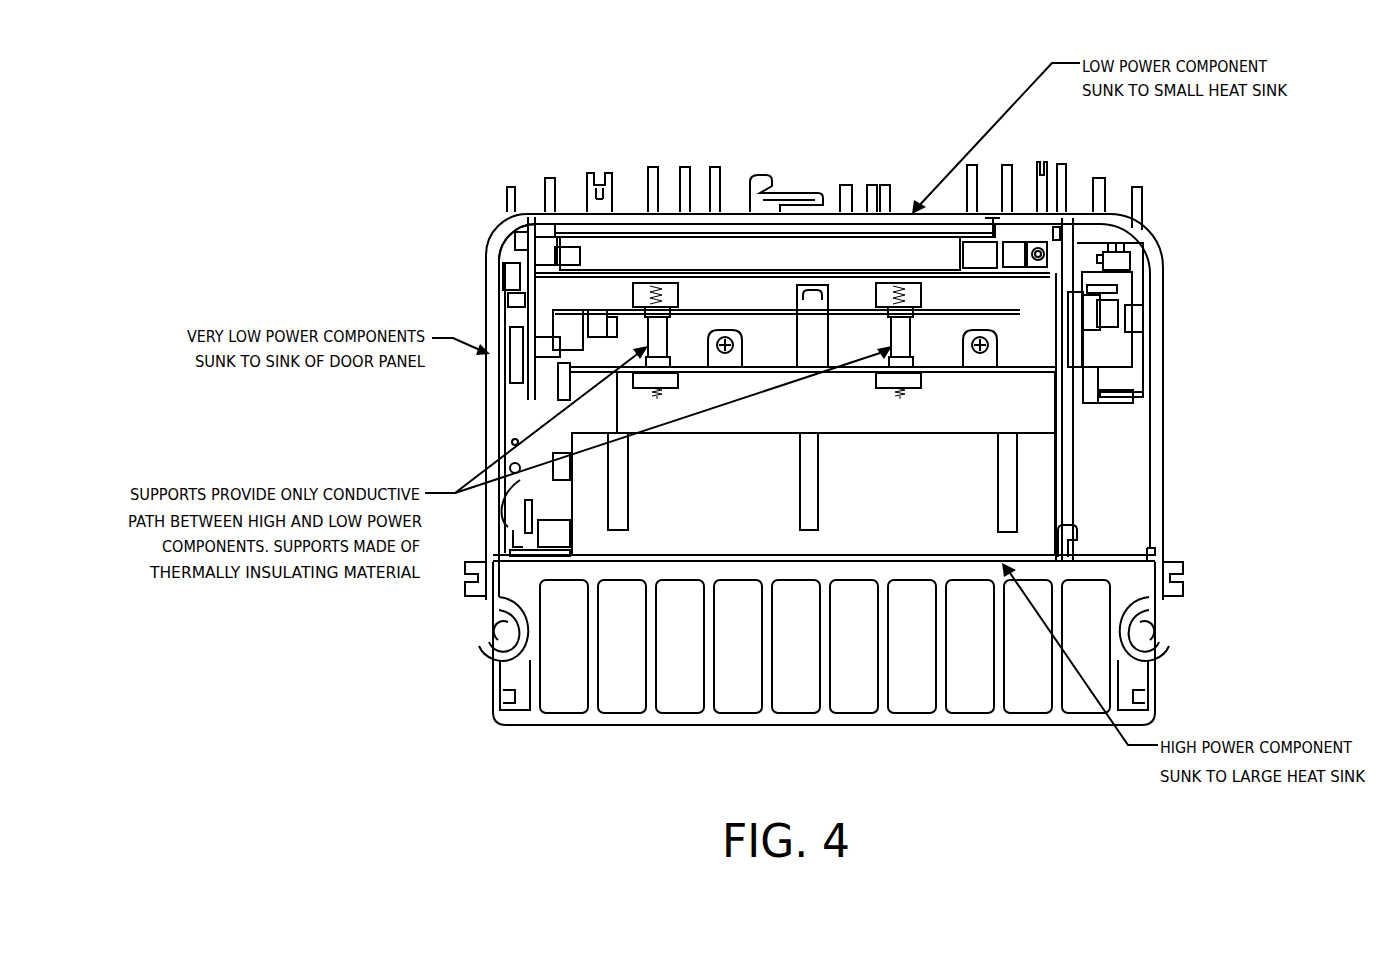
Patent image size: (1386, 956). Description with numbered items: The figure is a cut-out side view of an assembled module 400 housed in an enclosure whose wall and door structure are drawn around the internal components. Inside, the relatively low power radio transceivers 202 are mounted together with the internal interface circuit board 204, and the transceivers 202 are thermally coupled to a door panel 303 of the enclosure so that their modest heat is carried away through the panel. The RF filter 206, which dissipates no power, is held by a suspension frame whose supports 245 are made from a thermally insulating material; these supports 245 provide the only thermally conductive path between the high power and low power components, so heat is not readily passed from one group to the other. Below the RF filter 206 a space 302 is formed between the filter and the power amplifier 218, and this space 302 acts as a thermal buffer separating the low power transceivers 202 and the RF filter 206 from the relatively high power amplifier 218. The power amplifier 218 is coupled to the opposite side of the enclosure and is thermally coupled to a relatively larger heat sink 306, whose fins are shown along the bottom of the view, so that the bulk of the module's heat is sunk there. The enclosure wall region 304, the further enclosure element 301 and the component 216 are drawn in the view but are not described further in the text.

The radio transceivers 202 is at (835, 260).
The internal interface circuit board 204 is at (497, 274).
The RF filter 206 is at (1040, 303).
The component mounted to housing side 216 is at (1138, 353).
The power amplifier 218 is at (1042, 513).
The supports 245 is at (657, 338).
The housing door 301 is at (527, 213).
The space 302 is at (830, 412).
The door panel 303 is at (992, 210).
The housing 304 is at (1170, 236).
The heat sink 306 is at (998, 717).
The assembled module 400 is at (1245, 234).